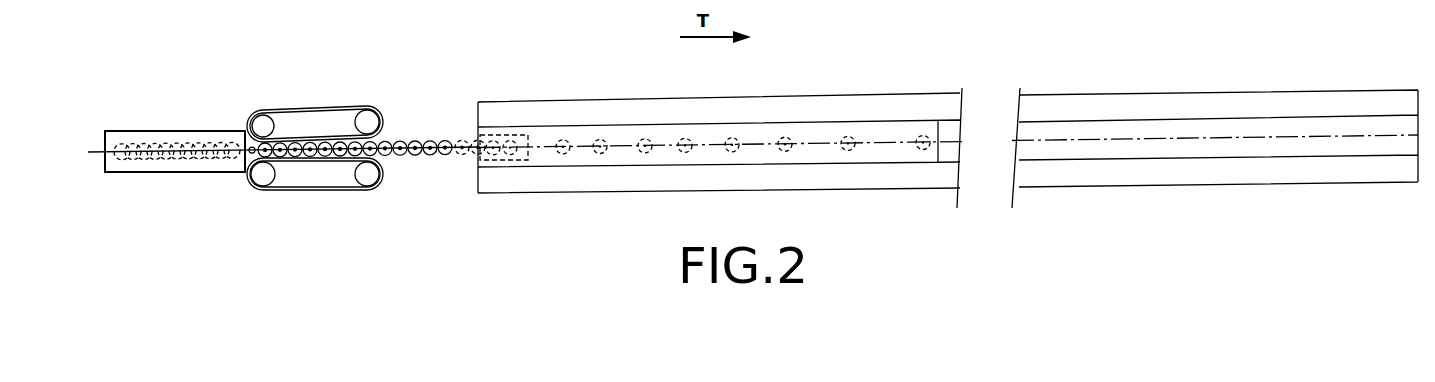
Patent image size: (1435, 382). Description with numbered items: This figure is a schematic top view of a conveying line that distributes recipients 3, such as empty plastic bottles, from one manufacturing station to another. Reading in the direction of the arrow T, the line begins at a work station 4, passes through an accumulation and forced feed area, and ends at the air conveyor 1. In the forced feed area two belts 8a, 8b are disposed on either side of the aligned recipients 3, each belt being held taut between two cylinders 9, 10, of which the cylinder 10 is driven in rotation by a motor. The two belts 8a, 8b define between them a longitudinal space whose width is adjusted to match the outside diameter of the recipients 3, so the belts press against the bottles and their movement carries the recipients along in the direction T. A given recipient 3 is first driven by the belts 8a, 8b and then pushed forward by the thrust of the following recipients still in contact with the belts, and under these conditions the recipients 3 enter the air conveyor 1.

The air conveyor 1 is at (619, 98).
The recipients 3 is at (530, 134).
The work station 4 is at (185, 128).
The belt 8a is at (327, 190).
The belt 8b is at (322, 108).
The cylinder 9 is at (263, 125).
The cylinder 10 is at (373, 117).